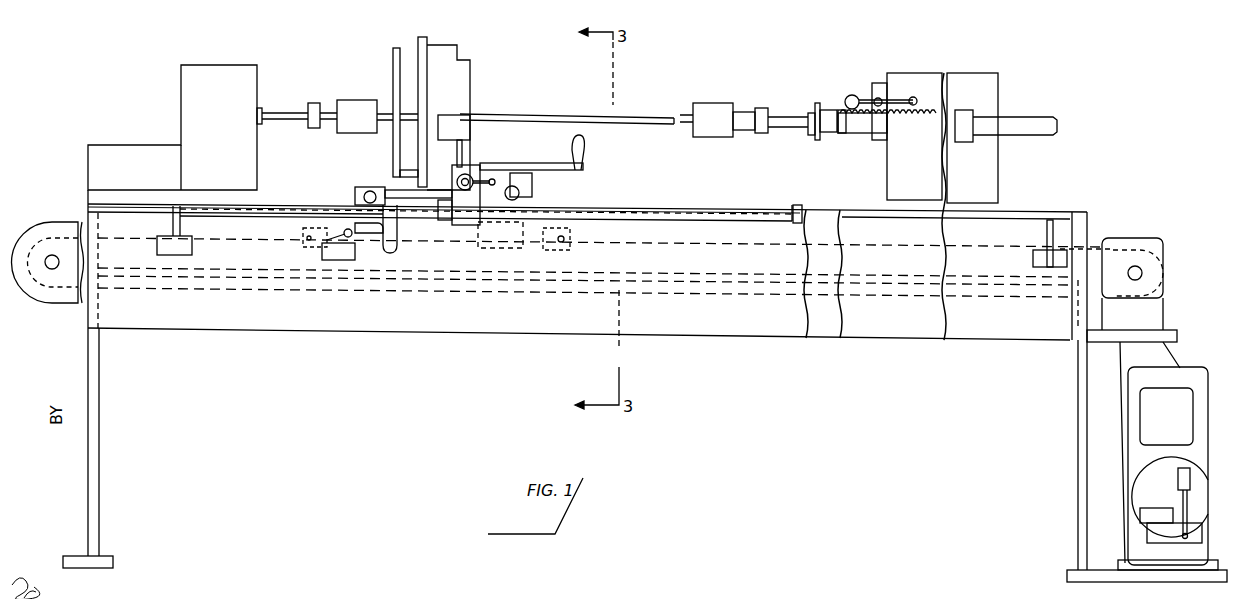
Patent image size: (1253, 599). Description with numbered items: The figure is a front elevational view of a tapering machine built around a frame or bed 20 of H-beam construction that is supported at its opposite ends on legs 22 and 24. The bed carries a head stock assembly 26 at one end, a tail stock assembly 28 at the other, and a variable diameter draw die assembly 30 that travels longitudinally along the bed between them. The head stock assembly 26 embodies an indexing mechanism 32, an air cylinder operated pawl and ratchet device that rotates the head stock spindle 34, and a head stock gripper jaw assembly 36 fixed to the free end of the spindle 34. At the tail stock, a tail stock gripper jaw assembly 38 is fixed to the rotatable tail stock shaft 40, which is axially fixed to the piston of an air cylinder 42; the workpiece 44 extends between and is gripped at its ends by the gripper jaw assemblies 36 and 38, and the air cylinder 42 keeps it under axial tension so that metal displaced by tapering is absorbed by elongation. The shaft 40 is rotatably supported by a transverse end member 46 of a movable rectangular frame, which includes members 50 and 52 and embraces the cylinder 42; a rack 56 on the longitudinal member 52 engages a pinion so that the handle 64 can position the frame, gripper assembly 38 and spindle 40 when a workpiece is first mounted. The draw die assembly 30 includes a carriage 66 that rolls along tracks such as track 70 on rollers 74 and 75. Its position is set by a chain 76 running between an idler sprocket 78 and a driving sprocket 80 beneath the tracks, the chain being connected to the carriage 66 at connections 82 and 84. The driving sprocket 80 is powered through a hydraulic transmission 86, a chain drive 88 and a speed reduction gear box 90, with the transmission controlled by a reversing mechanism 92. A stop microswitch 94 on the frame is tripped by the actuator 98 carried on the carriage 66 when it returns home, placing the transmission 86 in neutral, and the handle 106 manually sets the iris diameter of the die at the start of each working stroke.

The frame or bed 20 is at (643, 336).
The leg 22 is at (86, 357).
The leg 24 is at (1077, 396).
The head stock assembly 26 is at (216, 60).
The tail stock assembly 28 is at (925, 40).
The variable diameter draw die assembly 30 is at (470, 20).
The indexing mechanism 32 is at (180, 107).
The head stock spindle 34 is at (301, 108).
The head stock gripper jaw assembly 36 is at (358, 100).
The tail stock gripper jaw assembly 38 is at (718, 103).
The tail stock shaft 40 is at (790, 115).
The air cylinder 42 is at (990, 40).
The workpiece 44 is at (392, 108).
The end member 46 is at (816, 140).
The frame member 50 is at (1058, 125).
The longitudinally extending frame member 52 is at (847, 135).
The rack 56 is at (833, 108).
The handle 64 is at (855, 96).
The carriage 66 is at (390, 183).
The track 70 is at (334, 206).
The roller 74 is at (362, 190).
The roller 75 is at (522, 197).
The chain 76 is at (272, 238).
The idler sprocket 78 is at (45, 238).
The driving sprocket 80 is at (1162, 268).
The chain connection 82 is at (302, 244).
The chain connection 84 is at (557, 228).
The hydraulic transmission 86 is at (1213, 418).
The chain drive 88 is at (1177, 338).
The speed reduction gear box 90 is at (1164, 245).
The reversing mechanism 92 is at (1208, 508).
The stop microswitch 94 is at (337, 260).
The microswitch actuator 98 is at (398, 246).
The handle 106 is at (492, 178).